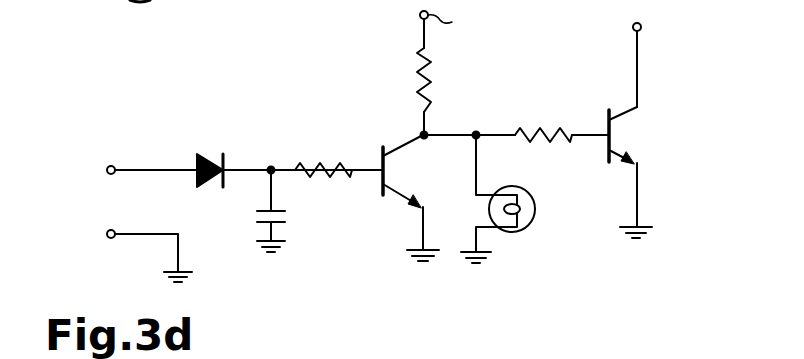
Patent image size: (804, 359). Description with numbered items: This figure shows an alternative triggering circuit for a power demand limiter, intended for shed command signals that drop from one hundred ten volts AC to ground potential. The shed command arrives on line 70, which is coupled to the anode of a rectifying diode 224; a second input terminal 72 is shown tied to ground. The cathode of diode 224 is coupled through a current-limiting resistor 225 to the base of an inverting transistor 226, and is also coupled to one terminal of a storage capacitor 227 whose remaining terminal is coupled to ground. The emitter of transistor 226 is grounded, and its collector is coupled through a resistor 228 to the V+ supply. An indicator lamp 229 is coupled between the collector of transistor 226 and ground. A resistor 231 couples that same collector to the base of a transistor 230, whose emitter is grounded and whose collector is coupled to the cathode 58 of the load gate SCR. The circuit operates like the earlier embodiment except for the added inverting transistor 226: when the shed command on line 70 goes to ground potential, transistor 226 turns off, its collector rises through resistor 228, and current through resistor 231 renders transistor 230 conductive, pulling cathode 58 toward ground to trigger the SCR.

The line 70 is at (141, 168).
The ground terminal 72 is at (145, 233).
The rectifying diode 224 is at (212, 149).
The current-limiting resistor 225 is at (313, 162).
The inverting transistor 226 is at (393, 215).
The storage capacitor 227 is at (287, 225).
The resistor 228 is at (428, 80).
The indicator lamp 229 is at (535, 238).
The transistor 230 is at (643, 140).
The resistor 231 is at (543, 128).
The cathode 58 is at (640, 30).